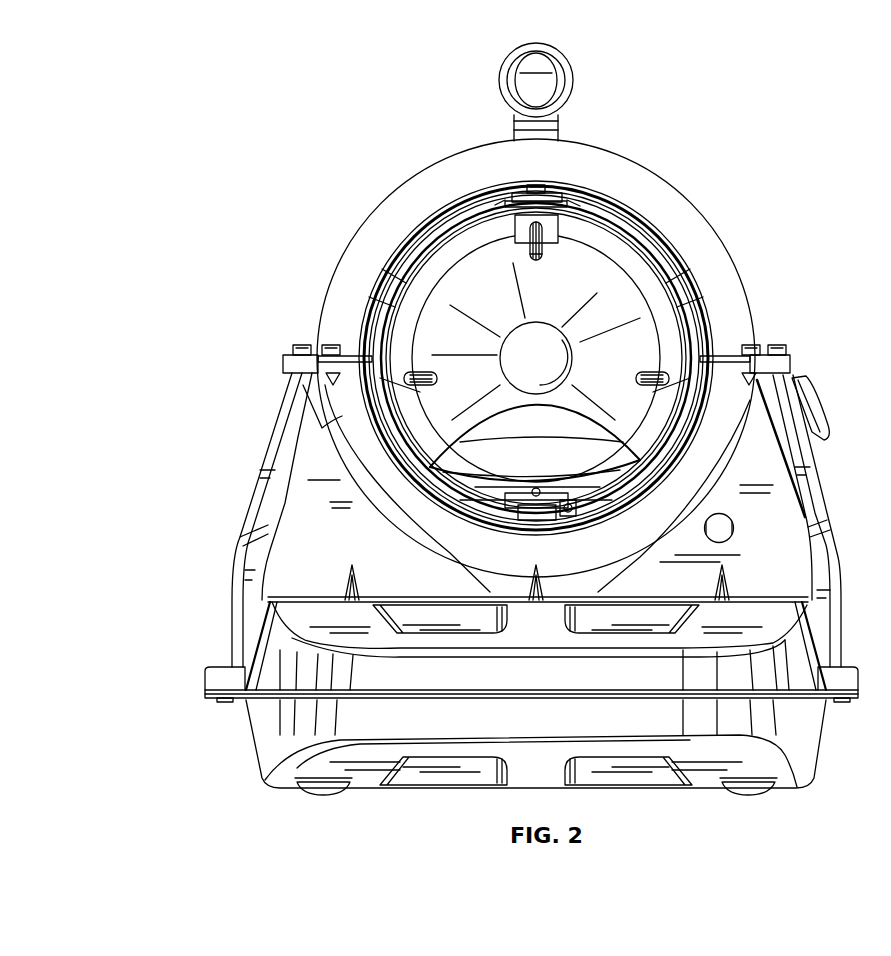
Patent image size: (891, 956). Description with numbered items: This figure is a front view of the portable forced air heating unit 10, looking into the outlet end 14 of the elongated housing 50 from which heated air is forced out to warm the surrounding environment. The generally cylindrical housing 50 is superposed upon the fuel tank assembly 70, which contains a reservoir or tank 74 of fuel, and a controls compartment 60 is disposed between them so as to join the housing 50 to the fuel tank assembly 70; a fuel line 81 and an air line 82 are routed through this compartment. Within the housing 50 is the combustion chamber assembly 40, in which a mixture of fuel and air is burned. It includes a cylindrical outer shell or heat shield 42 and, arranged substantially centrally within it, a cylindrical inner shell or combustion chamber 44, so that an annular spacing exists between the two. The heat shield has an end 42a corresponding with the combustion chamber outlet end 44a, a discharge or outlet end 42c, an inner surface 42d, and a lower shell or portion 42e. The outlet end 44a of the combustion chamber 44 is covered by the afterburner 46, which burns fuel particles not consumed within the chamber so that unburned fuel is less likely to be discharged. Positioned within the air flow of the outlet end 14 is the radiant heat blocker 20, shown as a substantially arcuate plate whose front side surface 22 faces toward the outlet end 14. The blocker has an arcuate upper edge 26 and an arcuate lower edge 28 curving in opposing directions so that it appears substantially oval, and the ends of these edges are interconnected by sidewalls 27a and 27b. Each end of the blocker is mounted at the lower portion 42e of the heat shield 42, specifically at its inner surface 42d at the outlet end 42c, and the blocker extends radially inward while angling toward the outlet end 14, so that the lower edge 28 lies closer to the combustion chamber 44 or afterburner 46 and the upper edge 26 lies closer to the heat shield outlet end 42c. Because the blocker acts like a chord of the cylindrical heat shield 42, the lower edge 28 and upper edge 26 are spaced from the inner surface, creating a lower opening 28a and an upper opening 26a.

The portable forced air heating unit 10 is at (190, 110).
The outlet end 14 is at (340, 284).
The radiant heat blocker 20 is at (606, 385).
The front side surface 22 is at (660, 510).
The upper edge 26 is at (487, 425).
The upper opening 26a is at (492, 272).
The sidewall 27a is at (428, 483).
The sidewall 27b is at (420, 460).
The lower edge 28 is at (597, 505).
The lower opening 28a is at (505, 520).
The combustion chamber assembly 40 is at (712, 284).
The heat shield 42 is at (417, 252).
The heat shield end 42a is at (570, 174).
The heat shield outlet end 42c is at (690, 262).
The heat shield inner surface 42d is at (580, 240).
The lower shell 42e is at (565, 520).
The combustion chamber 44 is at (380, 252).
The combustion chamber outlet end 44a is at (586, 221).
The afterburner 46 is at (592, 290).
The housing 50 is at (428, 168).
The controls compartment 60 is at (293, 510).
The fuel tank assembly 70 is at (226, 744).
The fuel tank 74 is at (282, 773).
The fuel line 81 is at (697, 437).
The air line 82 is at (660, 487).